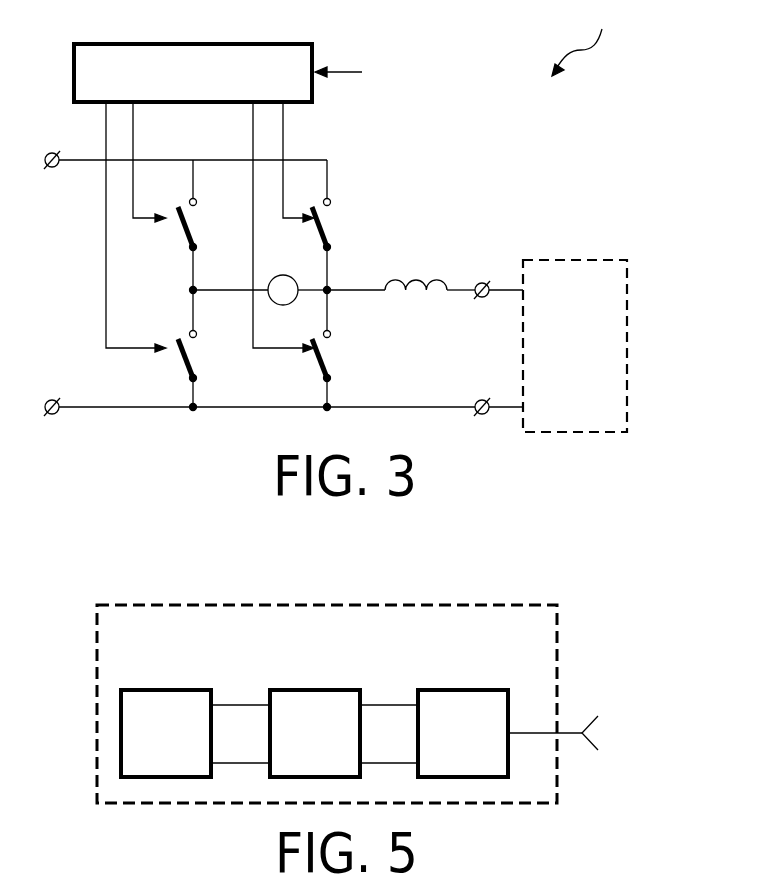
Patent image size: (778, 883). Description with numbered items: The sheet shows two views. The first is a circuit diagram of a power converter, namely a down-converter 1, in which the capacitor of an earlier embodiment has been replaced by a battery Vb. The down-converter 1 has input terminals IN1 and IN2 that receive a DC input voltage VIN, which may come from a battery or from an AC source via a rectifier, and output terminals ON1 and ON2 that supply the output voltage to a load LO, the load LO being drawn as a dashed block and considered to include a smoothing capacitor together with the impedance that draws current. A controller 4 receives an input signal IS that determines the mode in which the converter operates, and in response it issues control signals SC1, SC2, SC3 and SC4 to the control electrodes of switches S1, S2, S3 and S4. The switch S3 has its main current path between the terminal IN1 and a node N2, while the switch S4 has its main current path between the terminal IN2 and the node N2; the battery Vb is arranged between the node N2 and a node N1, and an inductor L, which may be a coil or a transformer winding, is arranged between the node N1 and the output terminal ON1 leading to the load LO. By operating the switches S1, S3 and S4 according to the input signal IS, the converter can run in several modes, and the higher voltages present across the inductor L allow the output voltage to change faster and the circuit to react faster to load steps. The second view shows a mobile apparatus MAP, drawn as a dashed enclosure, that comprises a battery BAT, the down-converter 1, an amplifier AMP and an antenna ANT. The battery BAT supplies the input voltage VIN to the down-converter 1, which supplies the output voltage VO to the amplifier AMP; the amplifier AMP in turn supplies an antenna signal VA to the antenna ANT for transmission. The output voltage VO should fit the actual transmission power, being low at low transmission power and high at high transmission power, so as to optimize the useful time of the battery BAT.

In FIG. 3, the down-converter 1 is at (582, 38).
In FIG. 5, the down-converter 1 is at (320, 690).
In FIG. 3, the controller 4 is at (313, 52).
In FIG. 3, the input signal IS is at (357, 74).
In FIG. 3, the control signal SC1 is at (311, 162).
In FIG. 3, the control signal SC2 is at (257, 227).
In FIG. 3, the control signal SC3 is at (160, 162).
In FIG. 3, the control signal SC4 is at (110, 227).
In FIG. 3, the input terminal IN1 is at (182, 178).
In FIG. 3, the input terminal IN2 is at (256, 389).
In FIG. 3, the DC-input voltage VIN is at (29, 267).
In FIG. 5, the DC-input voltage VIN is at (240, 734).
In FIG. 3, the switch S1 is at (339, 245).
In FIG. 3, the switch S2 is at (339, 348).
In FIG. 3, the switch S3 is at (205, 245).
In FIG. 3, the switch S4 is at (205, 348).
In FIG. 3, the node N1 is at (330, 290).
In FIG. 3, the node N2 is at (190, 290).
In FIG. 3, the battery Vb is at (260, 279).
In FIG. 3, the inductor L is at (401, 271).
In FIG. 3, the output terminal ON1 is at (491, 274).
In FIG. 3, the output terminal ON2 is at (491, 391).
In FIG. 3, the load LO is at (584, 258).
In FIG. 5, the mobile apparatus MAP is at (559, 622).
In FIG. 5, the battery BAT is at (171, 690).
In FIG. 5, the amplifier AMP is at (468, 690).
In FIG. 5, the output voltage VO is at (389, 734).
In FIG. 5, the antenna signal VA is at (527, 732).
In FIG. 5, the antenna ANT is at (619, 733).